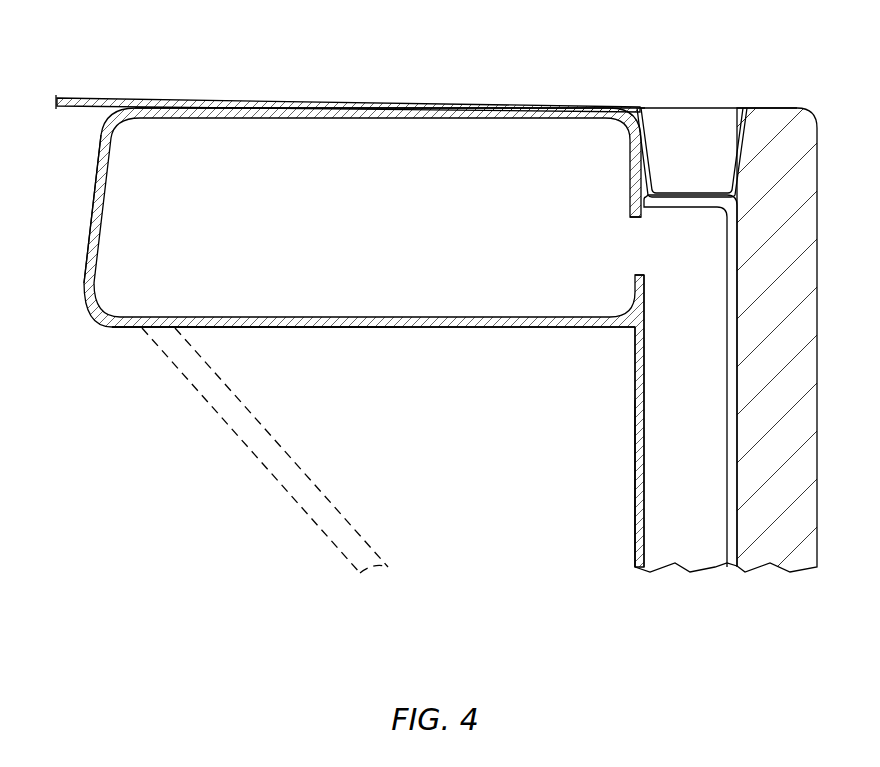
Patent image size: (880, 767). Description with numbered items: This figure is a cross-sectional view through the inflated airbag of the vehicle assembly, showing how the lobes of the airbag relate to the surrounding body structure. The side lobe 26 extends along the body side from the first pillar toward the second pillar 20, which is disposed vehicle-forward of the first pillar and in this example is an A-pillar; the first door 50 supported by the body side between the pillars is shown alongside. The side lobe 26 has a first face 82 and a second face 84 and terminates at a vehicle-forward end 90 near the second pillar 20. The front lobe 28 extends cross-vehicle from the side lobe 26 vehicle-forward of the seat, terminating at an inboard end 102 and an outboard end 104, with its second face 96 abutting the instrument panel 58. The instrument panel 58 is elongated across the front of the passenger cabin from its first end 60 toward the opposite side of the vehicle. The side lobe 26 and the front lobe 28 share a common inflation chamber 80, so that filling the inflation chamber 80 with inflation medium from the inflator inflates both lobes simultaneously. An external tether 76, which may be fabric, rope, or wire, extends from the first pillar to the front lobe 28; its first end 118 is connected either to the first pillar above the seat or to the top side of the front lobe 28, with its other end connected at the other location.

The second pillar 20 is at (700, 108).
The side lobe 26 is at (637, 470).
The front lobe 28 is at (100, 172).
The first door 50 is at (818, 285).
The instrument panel 58 is at (188, 98).
The first end 60 is at (620, 106).
The external tether 76 is at (262, 465).
The inflation chamber 80 is at (278, 168).
The first face 82 is at (635, 512).
The second face 84 is at (727, 512).
The vehicle-forward end 90 is at (681, 210).
The second face 96 is at (380, 120).
The inboard end 102 is at (85, 230).
The outboard end 104 is at (625, 247).
The first end 118 is at (163, 333).